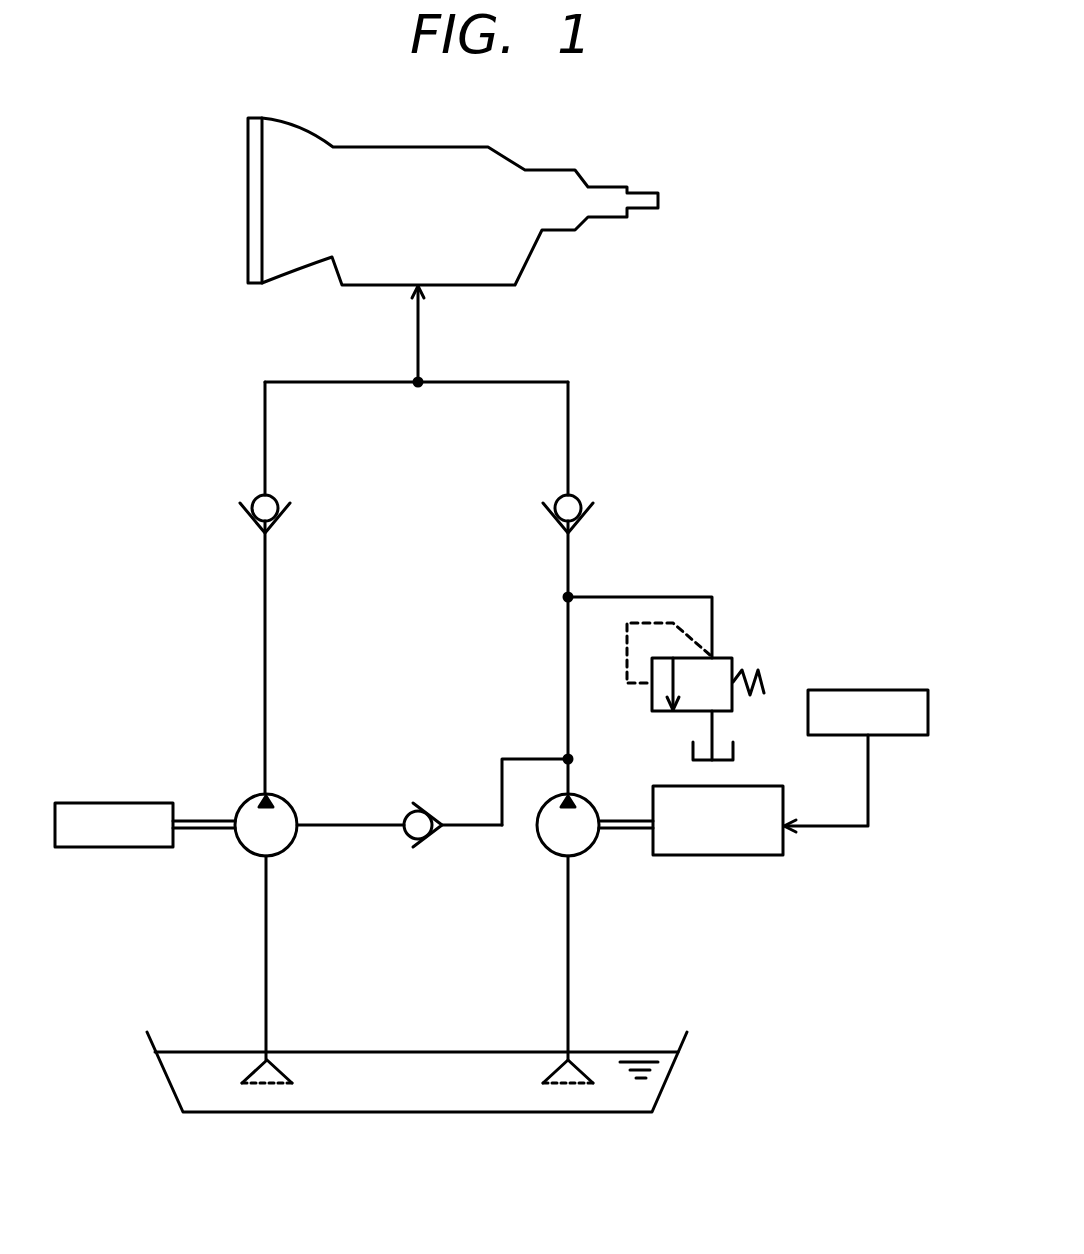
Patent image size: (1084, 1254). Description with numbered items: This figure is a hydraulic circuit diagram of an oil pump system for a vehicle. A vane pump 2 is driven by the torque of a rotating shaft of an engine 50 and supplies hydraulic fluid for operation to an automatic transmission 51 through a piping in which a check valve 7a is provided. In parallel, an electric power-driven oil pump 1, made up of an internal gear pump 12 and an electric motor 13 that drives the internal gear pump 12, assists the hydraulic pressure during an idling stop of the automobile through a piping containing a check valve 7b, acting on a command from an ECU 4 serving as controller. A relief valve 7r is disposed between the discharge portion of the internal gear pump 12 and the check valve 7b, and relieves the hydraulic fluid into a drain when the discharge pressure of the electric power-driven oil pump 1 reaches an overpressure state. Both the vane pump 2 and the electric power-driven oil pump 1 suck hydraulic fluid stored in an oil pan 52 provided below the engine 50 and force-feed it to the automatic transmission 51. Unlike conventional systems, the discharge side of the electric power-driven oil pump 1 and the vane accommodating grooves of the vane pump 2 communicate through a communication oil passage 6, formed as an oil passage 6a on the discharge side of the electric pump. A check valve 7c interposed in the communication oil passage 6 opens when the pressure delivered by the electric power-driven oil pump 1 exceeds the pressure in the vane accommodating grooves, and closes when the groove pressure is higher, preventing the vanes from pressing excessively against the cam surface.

The electric power-driven oil pump 1 is at (639, 923).
The vane pump 2 is at (243, 850).
The ECU 4 is at (898, 690).
The communication oil passage 6 is at (343, 812).
The oil passage 6a is at (530, 759).
The check valve 7a is at (277, 497).
The check valve 7b is at (578, 497).
The check valve 7c is at (406, 814).
The relief valve 7r is at (722, 658).
The internal gear pump 12 is at (545, 850).
The electric motor 13 is at (748, 855).
The engine 50 is at (157, 803).
The automatic transmission 51 is at (503, 153).
The oil pan 52 is at (672, 1072).